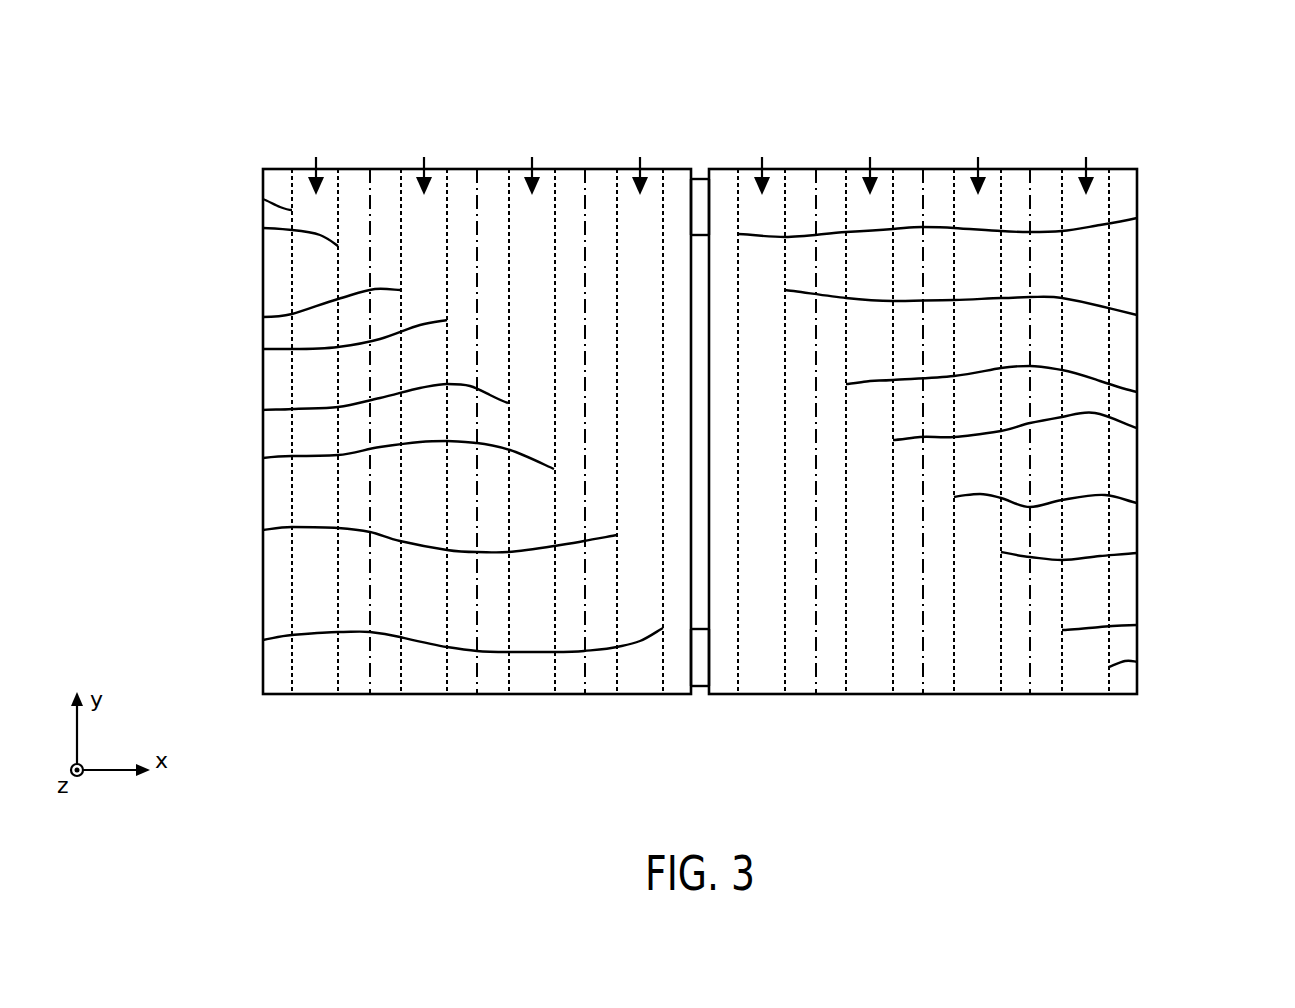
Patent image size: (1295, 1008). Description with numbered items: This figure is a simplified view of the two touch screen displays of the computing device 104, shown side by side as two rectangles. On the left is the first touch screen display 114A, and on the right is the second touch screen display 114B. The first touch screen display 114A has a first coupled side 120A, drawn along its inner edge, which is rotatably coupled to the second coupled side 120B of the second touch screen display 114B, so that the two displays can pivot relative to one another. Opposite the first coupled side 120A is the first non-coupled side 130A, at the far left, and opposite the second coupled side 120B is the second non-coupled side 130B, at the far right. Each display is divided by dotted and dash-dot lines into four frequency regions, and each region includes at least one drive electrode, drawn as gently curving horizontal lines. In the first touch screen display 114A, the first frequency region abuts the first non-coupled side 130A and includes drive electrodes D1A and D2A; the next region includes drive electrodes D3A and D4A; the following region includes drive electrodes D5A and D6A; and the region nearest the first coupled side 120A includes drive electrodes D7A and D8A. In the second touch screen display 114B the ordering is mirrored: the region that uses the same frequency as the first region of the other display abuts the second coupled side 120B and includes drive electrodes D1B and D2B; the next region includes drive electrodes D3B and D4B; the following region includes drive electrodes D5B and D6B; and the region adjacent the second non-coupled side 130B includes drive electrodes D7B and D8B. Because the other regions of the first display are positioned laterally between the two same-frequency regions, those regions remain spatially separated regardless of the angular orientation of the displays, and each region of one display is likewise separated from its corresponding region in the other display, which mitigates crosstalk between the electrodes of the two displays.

The computing device 104 is at (1197, 63).
The first touch screen display 114A is at (430, 62).
The second touch screen display 114B is at (947, 62).
The first non-coupled side 130A is at (263, 182).
The second non-coupled side 130B is at (1137, 190).
The first coupled side 120A is at (692, 601).
The second coupled side 120B is at (710, 586).
The drive electrode D1A is at (263, 199).
The drive electrode D2A is at (263, 228).
The drive electrode D3A is at (263, 317).
The drive electrode D4A is at (263, 349).
The drive electrode D5A is at (263, 410).
The drive electrode D6A is at (263, 458).
The drive electrode D7A is at (263, 530).
The drive electrode D8A is at (263, 640).
The drive electrode D1B is at (1137, 218).
The drive electrode D2B is at (1137, 315).
The drive electrode D3B is at (1137, 392).
The drive electrode D4B is at (1137, 428).
The drive electrode D5B is at (1137, 503).
The drive electrode D6B is at (1137, 553).
The drive electrode D7B is at (1137, 625).
The drive electrode D8B is at (1137, 662).